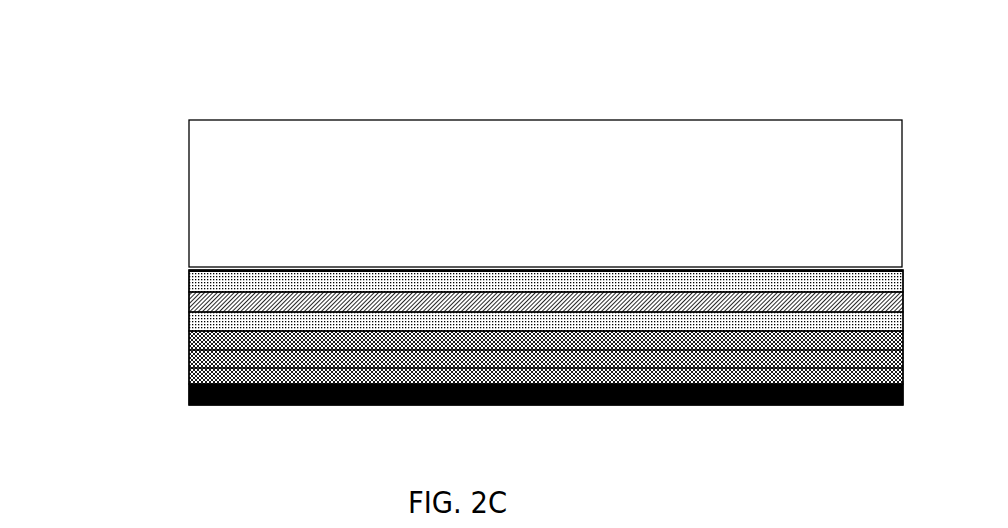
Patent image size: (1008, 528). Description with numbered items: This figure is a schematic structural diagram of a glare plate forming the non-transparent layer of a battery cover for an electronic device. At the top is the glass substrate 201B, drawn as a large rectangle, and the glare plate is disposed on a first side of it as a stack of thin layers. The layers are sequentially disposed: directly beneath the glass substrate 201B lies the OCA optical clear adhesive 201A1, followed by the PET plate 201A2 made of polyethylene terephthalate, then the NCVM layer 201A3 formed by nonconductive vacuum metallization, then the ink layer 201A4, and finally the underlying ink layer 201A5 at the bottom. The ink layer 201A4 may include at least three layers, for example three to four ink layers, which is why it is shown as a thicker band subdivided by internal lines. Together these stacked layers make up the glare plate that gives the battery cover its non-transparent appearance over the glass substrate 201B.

The glass substrate 201B is at (502, 170).
The OCA optical clear adhesive 201A1 is at (188, 289).
The PET plate 201A2 is at (188, 307).
The NCVM layer 201A3 is at (188, 338).
The ink layer 201A4 is at (188, 381).
The underlying ink layer 201A5 is at (213, 406).